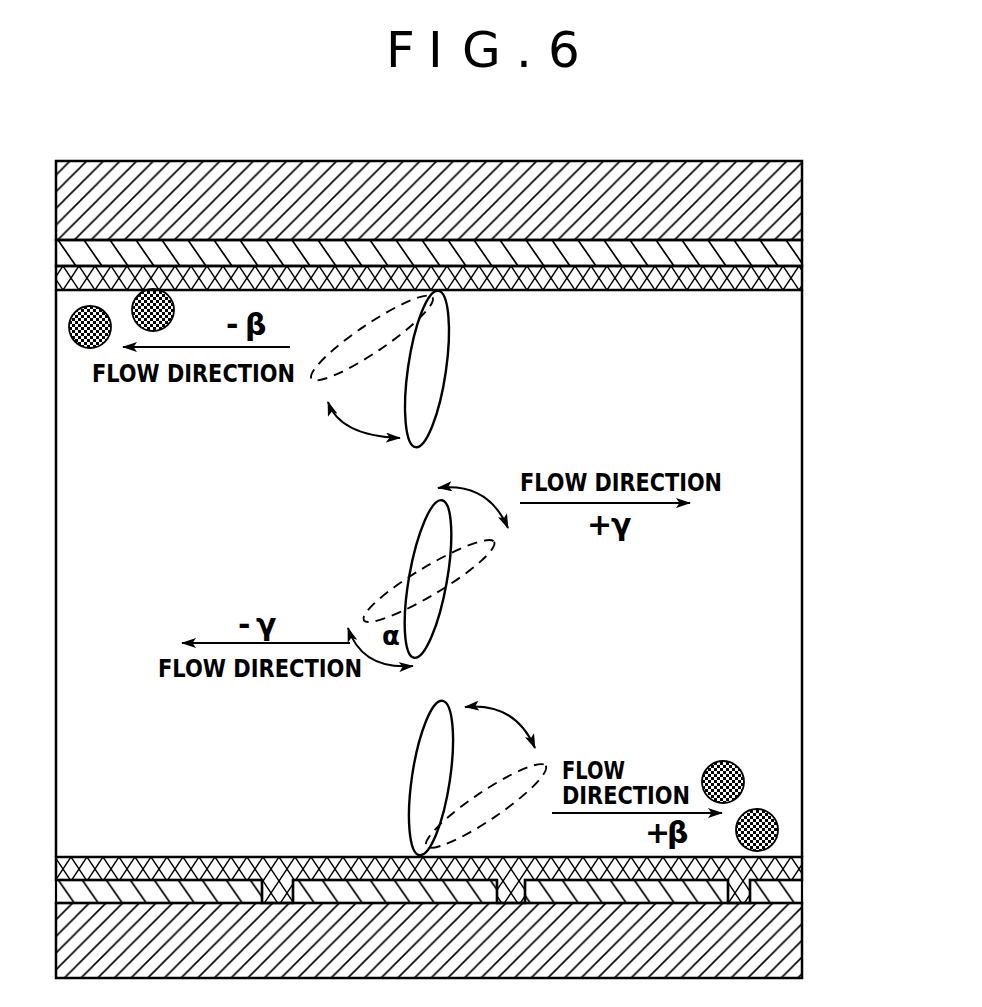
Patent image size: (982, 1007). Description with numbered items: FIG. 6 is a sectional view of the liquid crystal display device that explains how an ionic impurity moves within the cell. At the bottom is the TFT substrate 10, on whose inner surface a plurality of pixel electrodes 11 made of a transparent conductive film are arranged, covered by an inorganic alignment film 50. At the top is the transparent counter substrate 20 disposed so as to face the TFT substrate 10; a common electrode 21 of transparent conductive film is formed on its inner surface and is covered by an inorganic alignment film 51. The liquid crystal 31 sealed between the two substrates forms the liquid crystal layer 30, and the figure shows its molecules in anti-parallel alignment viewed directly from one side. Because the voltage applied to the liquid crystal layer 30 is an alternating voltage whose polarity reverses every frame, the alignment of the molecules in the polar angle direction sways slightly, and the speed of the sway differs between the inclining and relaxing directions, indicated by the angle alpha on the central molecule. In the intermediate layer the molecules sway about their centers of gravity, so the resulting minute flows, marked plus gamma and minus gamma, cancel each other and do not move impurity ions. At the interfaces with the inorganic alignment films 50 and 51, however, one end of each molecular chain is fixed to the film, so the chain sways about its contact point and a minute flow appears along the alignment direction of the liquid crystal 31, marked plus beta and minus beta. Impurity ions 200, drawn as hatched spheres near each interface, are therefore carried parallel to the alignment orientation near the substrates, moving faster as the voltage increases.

The TFT substrate 10 is at (790, 945).
The pixel electrodes 11 is at (790, 898).
The counter substrate 20 is at (790, 205).
The common electrode 21 is at (790, 253).
The liquid crystal layer 30 is at (790, 662).
The liquid crystal 31 is at (427, 613).
The inorganic alignment film 50 is at (790, 870).
The inorganic alignment film 51 is at (790, 278).
The impurity ions 200 is at (744, 778).